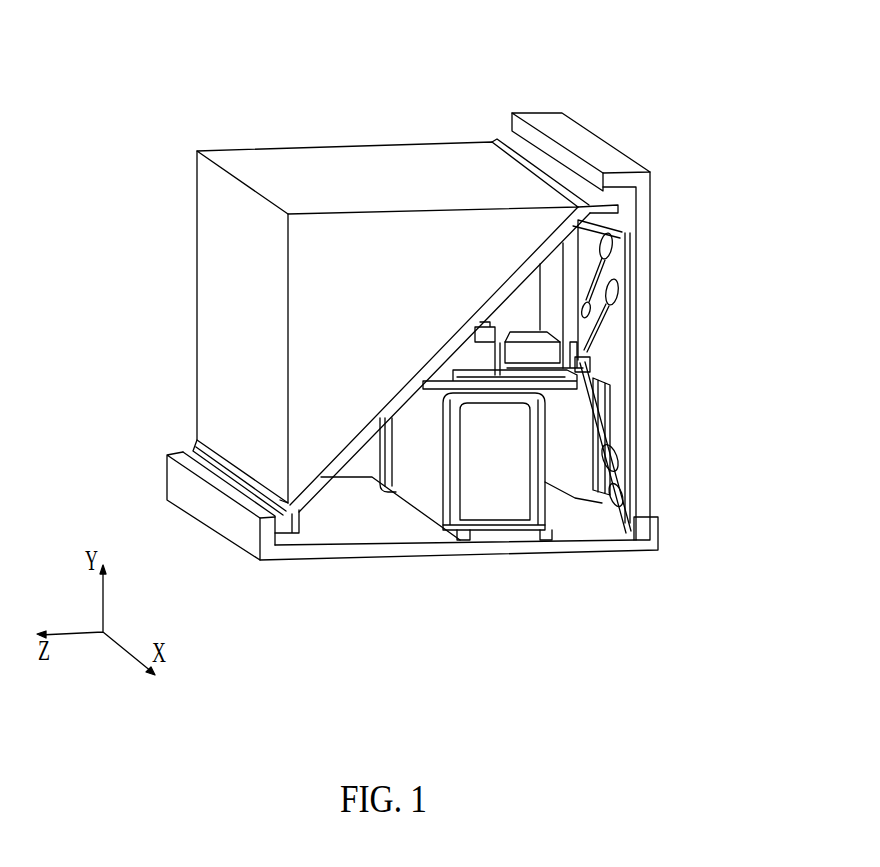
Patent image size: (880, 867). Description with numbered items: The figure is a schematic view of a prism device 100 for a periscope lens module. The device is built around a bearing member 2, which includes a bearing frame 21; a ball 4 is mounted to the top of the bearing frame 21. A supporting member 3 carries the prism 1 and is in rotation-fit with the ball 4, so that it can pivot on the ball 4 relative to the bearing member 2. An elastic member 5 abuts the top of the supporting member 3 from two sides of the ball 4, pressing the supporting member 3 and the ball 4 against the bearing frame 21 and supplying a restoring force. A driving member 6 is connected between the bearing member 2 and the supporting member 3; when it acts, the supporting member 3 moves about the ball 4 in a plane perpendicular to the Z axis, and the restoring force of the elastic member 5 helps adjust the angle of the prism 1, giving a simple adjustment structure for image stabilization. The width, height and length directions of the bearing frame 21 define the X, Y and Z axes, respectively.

The prism device 100 is at (383, 34).
The prism 1 is at (264, 437).
The bearing member 2 is at (635, 523).
The bearing frame 21 is at (516, 460).
The supporting member 3 is at (537, 343).
The ball 4 is at (580, 363).
The elastic member 5 is at (460, 477).
The driving member 6 is at (593, 273).